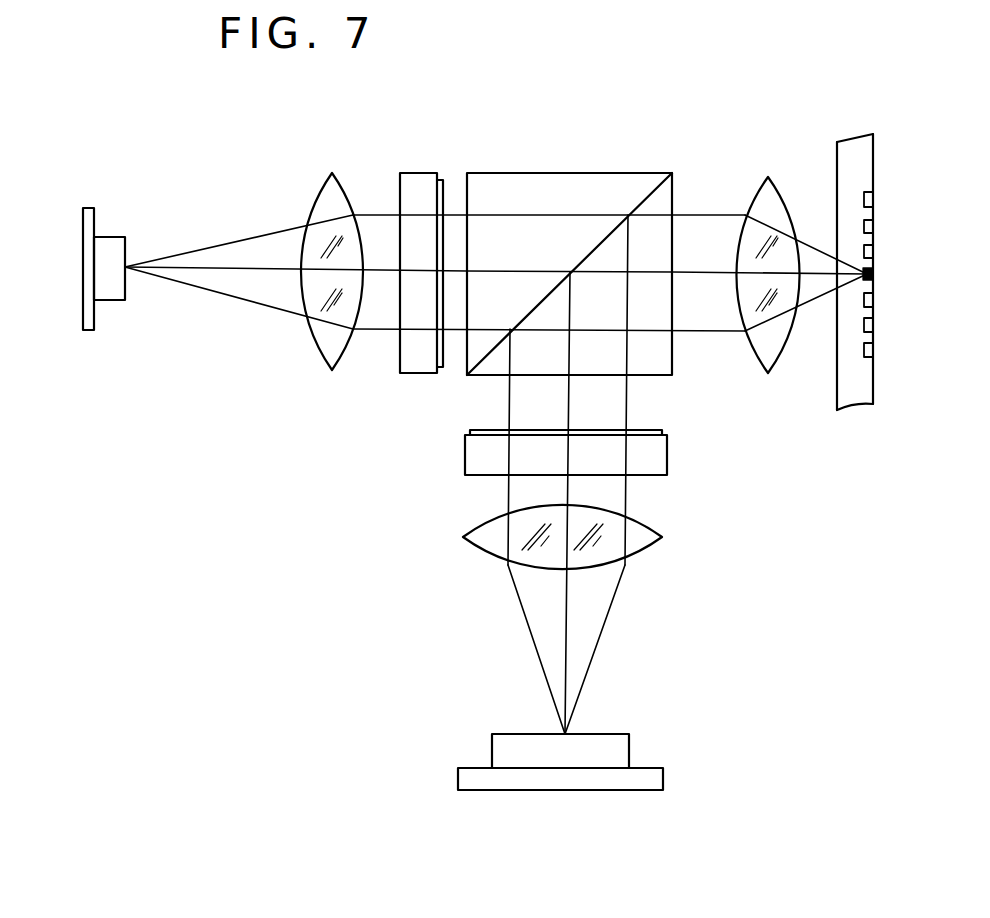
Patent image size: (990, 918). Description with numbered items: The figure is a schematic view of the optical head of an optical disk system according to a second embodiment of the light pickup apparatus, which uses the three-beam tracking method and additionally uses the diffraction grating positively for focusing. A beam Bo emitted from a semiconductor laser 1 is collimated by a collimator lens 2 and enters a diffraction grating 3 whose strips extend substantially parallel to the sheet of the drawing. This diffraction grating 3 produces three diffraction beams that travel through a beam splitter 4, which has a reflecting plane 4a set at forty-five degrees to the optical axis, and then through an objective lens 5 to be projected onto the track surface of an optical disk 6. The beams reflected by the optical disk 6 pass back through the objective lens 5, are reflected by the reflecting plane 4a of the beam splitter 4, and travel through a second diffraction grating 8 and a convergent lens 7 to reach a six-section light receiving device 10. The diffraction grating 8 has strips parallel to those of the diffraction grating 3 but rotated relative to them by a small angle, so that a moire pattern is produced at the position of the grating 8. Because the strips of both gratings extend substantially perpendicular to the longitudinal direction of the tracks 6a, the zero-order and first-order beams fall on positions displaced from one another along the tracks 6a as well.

The semiconductor laser 1 is at (110, 237).
The beam Bo is at (200, 247).
The collimator lens 2 is at (322, 199).
The diffraction grating 3 is at (418, 178).
The beam splitter 4 is at (540, 180).
The reflecting plane 4a is at (648, 197).
The objective lens 5 is at (772, 195).
The optical disk 6 is at (867, 157).
The tracks 6a is at (873, 275).
The convergent lens 7 is at (643, 540).
The diffraction grating 8 is at (663, 465).
The six-section light receiving device 10 is at (625, 746).